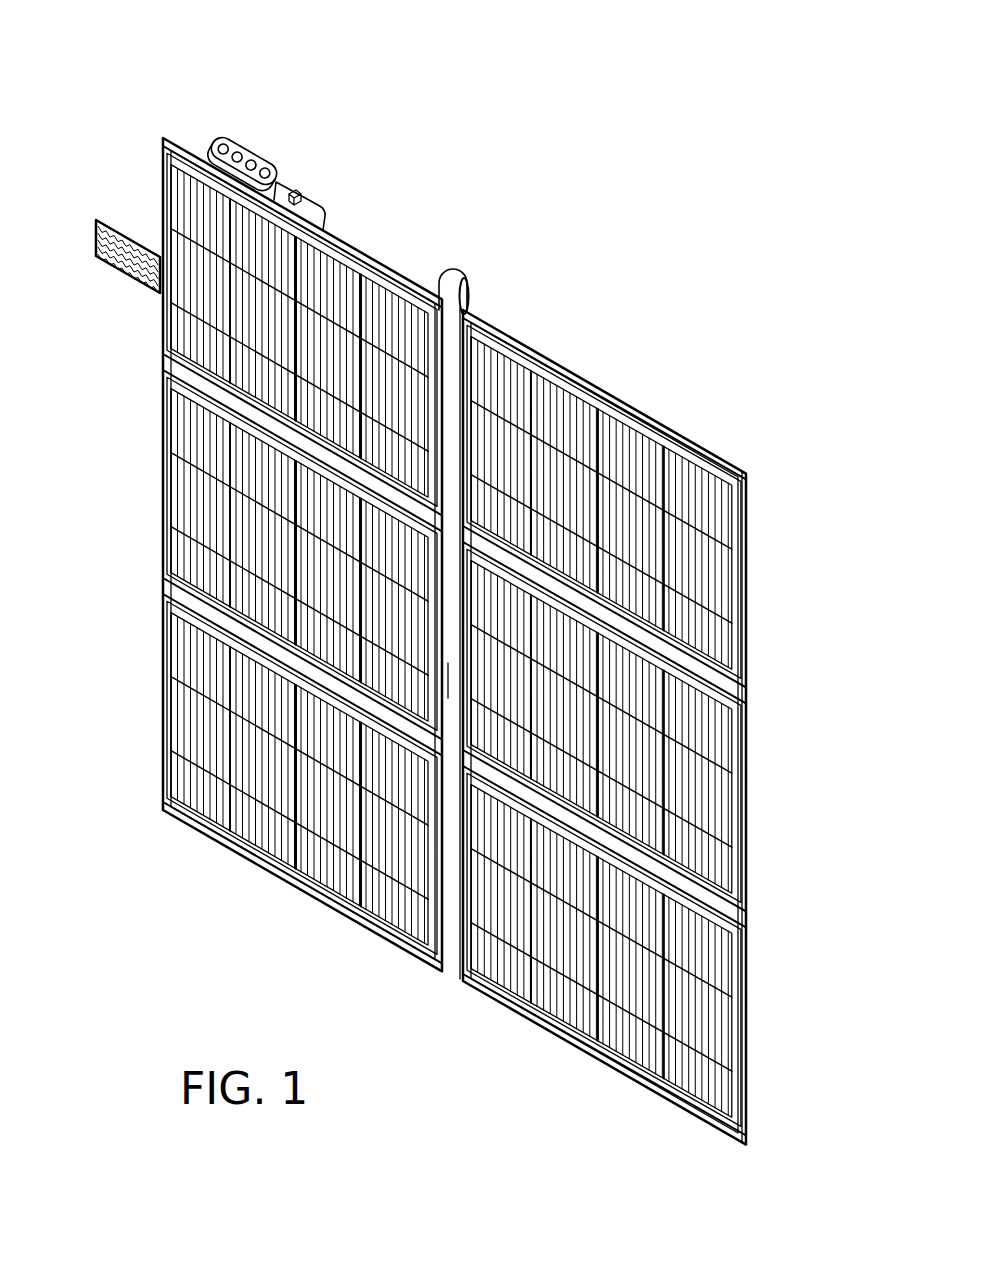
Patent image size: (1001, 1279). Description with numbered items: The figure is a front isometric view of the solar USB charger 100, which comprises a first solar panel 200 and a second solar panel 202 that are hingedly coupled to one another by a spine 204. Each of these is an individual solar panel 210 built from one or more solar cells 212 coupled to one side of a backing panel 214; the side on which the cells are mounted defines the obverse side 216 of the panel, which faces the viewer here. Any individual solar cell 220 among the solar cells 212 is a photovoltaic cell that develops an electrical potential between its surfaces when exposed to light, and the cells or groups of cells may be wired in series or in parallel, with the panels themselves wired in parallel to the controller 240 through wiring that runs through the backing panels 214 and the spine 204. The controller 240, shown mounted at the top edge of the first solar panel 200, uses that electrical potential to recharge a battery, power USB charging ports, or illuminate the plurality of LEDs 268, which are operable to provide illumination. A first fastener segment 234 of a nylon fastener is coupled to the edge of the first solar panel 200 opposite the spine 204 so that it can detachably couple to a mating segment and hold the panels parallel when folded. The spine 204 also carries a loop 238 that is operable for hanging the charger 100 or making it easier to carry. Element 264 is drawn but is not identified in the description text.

The solar USB charger 100 is at (632, 208).
The first solar panel 200 is at (242, 554).
The second solar panel 202 is at (700, 720).
The spine 204 is at (443, 970).
The individual solar panel 210 is at (738, 458).
The solar cells 212 is at (701, 726).
The backing panel 214 is at (742, 487).
The obverse side 216 is at (703, 1023).
The individual solar cell 220 is at (176, 500).
The first fastener segment 234 is at (104, 211).
The loop 238 is at (447, 268).
The controller 240 is at (311, 196).
The connector 264 is at (290, 180).
The LEDs 268 is at (277, 155).